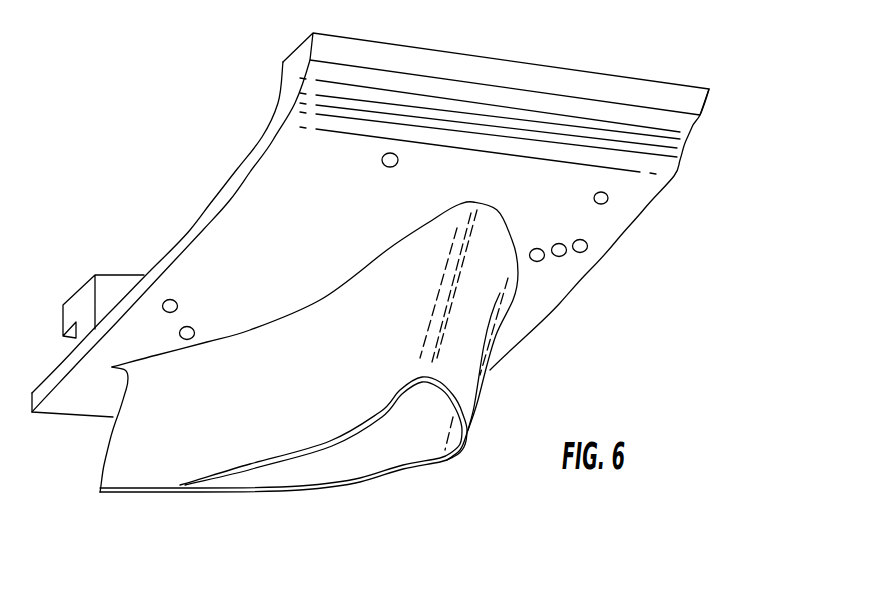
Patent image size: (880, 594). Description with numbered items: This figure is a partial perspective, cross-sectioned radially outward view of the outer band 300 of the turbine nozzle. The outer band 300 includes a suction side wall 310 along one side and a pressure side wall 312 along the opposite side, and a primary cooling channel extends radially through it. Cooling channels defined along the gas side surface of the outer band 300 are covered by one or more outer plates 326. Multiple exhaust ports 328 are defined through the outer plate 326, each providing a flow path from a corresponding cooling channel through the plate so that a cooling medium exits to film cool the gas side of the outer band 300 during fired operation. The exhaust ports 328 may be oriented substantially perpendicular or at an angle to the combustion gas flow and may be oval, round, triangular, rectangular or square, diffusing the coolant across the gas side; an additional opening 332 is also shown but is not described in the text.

The outer band 300 is at (630, 47).
The suction side wall 310 is at (70, 363).
The pressure side wall 312 is at (680, 172).
The outer plate 326 is at (267, 207).
The exhaust port 328 is at (195, 322).
The aperture 332 is at (389, 172).